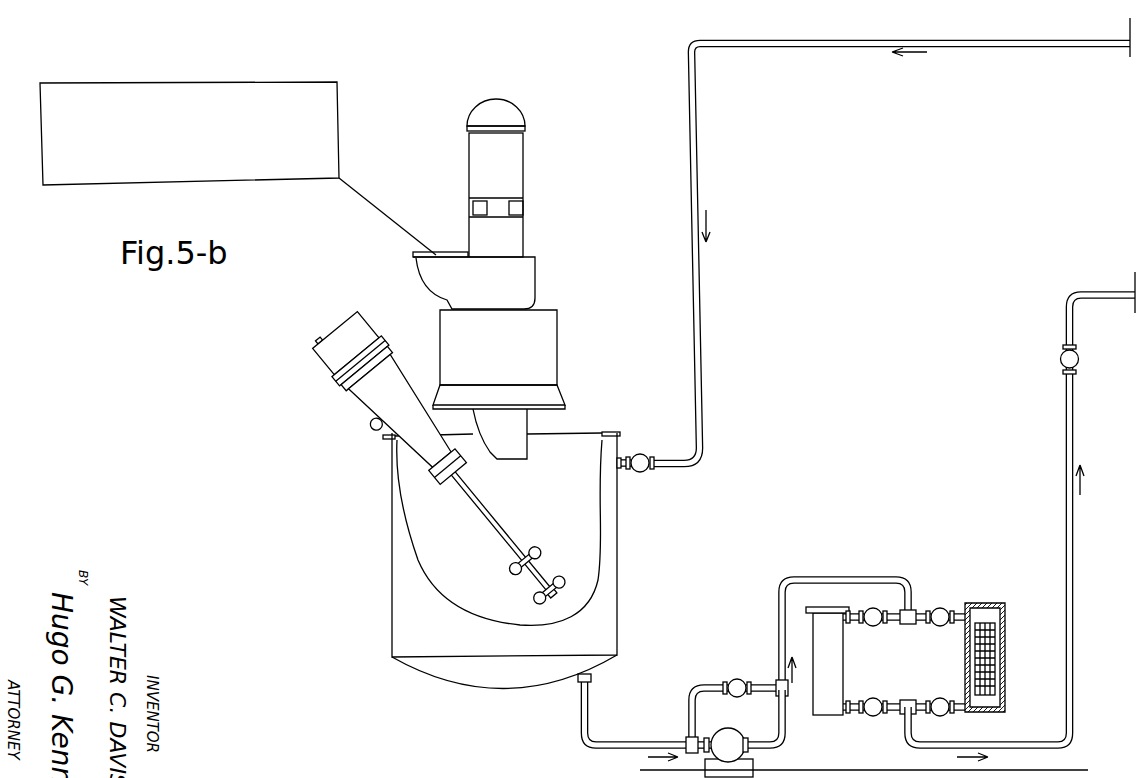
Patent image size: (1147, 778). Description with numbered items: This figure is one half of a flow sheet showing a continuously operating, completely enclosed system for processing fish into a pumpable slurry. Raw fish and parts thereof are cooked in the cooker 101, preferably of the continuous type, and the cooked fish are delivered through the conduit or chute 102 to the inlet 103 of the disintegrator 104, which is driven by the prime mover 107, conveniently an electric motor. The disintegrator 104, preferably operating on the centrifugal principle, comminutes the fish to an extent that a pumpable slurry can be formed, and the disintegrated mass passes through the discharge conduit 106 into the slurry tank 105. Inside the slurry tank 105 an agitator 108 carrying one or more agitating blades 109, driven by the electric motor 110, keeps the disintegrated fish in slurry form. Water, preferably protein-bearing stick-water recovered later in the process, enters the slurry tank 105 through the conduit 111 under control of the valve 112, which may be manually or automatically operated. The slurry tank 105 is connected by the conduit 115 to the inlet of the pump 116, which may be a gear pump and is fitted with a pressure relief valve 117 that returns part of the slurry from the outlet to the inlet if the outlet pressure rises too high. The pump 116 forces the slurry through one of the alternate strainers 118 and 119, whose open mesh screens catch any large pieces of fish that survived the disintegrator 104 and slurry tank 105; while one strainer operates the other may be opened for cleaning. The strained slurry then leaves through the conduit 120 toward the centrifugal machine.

The cooker 101 is at (334, 98).
The conduit or chute 102 is at (358, 193).
The inlet 103 is at (440, 252).
The disintegrator 104 is at (531, 284).
The slurry tank 105 is at (397, 568).
The discharge conduit 106 is at (521, 424).
The prime mover 107 is at (522, 158).
The agitator 108 is at (492, 520).
The agitating blades 109 is at (537, 548).
The electric motor 110 is at (348, 395).
The conduit 111 is at (657, 460).
The valve 112 is at (643, 471).
The conduit 115 is at (587, 704).
The pump 116 is at (750, 766).
The pressure relief valve 117 is at (734, 681).
The strainer 118 is at (838, 713).
The strainer 119 is at (1006, 697).
The conduit 120 is at (1072, 408).